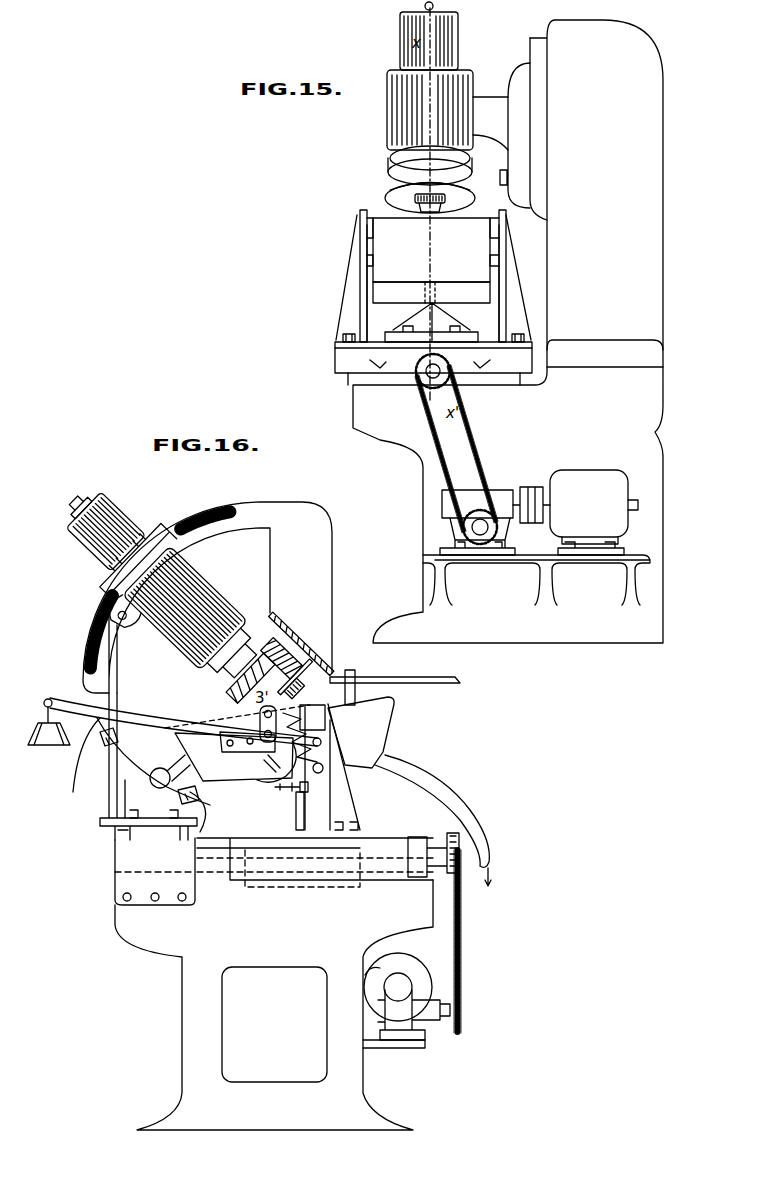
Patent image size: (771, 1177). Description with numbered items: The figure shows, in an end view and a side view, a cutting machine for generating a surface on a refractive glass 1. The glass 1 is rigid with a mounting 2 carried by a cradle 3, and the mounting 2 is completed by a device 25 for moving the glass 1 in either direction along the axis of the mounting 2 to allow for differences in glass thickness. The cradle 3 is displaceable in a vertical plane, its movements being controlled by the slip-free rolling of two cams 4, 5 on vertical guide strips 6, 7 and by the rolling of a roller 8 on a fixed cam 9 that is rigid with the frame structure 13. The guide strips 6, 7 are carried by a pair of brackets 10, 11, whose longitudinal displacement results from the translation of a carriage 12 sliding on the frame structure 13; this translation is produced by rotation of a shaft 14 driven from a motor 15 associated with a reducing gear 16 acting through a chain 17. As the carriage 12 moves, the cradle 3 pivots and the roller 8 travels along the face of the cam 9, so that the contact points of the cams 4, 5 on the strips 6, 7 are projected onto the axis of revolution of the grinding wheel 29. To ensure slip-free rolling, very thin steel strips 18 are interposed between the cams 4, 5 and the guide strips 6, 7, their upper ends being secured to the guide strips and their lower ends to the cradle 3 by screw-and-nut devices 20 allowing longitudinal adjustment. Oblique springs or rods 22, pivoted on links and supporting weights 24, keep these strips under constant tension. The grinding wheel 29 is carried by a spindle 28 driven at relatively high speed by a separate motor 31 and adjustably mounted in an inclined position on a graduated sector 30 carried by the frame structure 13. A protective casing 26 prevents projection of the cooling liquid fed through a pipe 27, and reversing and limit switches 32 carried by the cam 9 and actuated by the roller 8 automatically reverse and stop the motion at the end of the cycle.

In FIG. 15, the refractive glass 1 is at (418, 185).
In FIG. 16, the refractive glass 1 is at (290, 668).
In FIG. 15, the mounting 2 is at (414, 199).
In FIG. 16, the mounting 2 is at (300, 675).
In FIG. 15, the cradle 3 is at (431, 260).
In FIG. 16, the cradle 3 is at (234, 757).
In FIG. 15, the cam 4 is at (359, 228).
In FIG. 16, the cam 4 is at (322, 709).
In FIG. 15, the cam 5 is at (507, 224).
In FIG. 15, the vertical guide strip 6 is at (362, 284).
In FIG. 16, the vertical guide strip 6 is at (322, 714).
In FIG. 15, the vertical guide strip 7 is at (497, 272).
In FIG. 16, the roller 8 is at (150, 778).
In FIG. 15, the fixed cam 9 is at (428, 324).
In FIG. 16, the fixed cam 9 is at (118, 764).
In FIG. 15, the bracket 10 is at (348, 320).
In FIG. 16, the bracket 10 is at (348, 800).
In FIG. 15, the bracket 11 is at (514, 313).
In FIG. 15, the carriage 12 is at (340, 360).
In FIG. 16, the carriage 12 is at (270, 850).
In FIG. 15, the frame structure 13 is at (508, 331).
In FIG. 16, the frame structure 13 is at (274, 984).
In FIG. 15, the shaft 14 is at (420, 382).
In FIG. 16, the shaft 14 is at (438, 850).
In FIG. 15, the motor 15 is at (575, 512).
In FIG. 16, the motor 15 is at (378, 978).
In FIG. 15, the reducing gear 16 is at (465, 505).
In FIG. 16, the reducing gear 16 is at (400, 982).
In FIG. 15, the chain 17 is at (474, 439).
In FIG. 16, the chain 17 is at (462, 928).
In FIG. 16, the steel strip 18 is at (258, 782).
In FIG. 16, the screw-and-nut device 20 is at (292, 788).
In FIG. 16, the oblique spring or rod 22 is at (62, 704).
In FIG. 16, the weight 24 is at (49, 743).
In FIG. 16, the device for moving the glass 25 is at (309, 811).
In FIG. 16, the protective casing 26 is at (318, 660).
In FIG. 16, the pipe 27 is at (437, 683).
In FIG. 15, the spindle 28 is at (468, 134).
In FIG. 16, the spindle 28 is at (218, 608).
In FIG. 15, the grinding wheel 29 is at (415, 175).
In FIG. 16, the grinding wheel 29 is at (272, 650).
In FIG. 16, the graduated sector 30 is at (200, 540).
In FIG. 15, the motor 31 is at (410, 55).
In FIG. 16, the motor 31 is at (90, 546).
In FIG. 16, the reversing and limit switches 32 is at (117, 737).